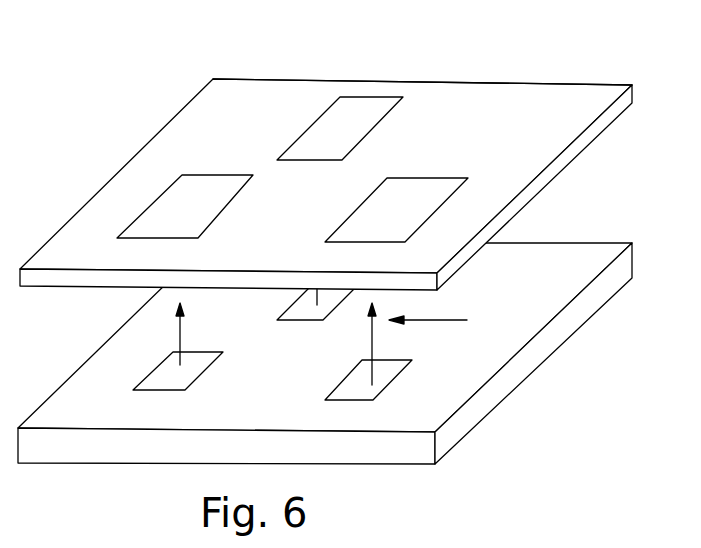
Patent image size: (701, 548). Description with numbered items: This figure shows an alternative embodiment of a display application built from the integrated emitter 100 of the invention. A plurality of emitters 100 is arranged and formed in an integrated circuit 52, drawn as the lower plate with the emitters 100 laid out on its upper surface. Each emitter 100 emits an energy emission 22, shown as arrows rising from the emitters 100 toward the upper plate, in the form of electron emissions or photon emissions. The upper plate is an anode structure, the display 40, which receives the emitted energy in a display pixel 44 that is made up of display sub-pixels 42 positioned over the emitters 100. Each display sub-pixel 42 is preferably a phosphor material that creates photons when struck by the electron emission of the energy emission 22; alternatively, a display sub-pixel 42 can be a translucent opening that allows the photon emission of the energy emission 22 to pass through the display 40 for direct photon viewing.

The display 40 is at (617, 117).
The display sub-pixel 42 is at (222, 213).
The display pixel 44 is at (237, 120).
The integrated circuit 52 is at (540, 365).
The integrated emitter 100 is at (197, 378).
The energy emission 22 is at (445, 322).